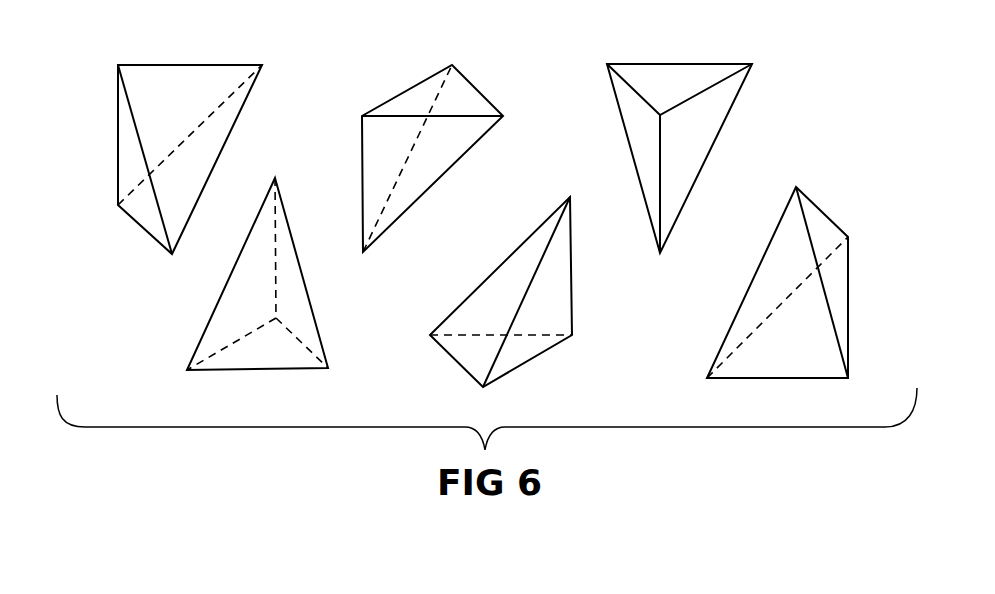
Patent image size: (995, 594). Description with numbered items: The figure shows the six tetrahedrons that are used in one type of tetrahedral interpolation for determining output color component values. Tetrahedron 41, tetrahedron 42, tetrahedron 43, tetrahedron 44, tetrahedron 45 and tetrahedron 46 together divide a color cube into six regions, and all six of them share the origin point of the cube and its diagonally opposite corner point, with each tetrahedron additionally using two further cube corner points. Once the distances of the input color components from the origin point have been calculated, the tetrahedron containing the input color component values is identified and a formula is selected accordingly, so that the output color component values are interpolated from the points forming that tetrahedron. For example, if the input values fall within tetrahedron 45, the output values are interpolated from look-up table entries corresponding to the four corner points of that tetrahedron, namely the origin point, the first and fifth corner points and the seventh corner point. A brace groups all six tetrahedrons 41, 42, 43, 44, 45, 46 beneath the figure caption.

The tetrahedron 41 is at (117, 147).
The tetrahedron 42 is at (403, 92).
The tetrahedron 43 is at (678, 62).
The tetrahedron 44 is at (203, 330).
The tetrahedron 45 is at (507, 258).
The tetrahedron 46 is at (763, 253).